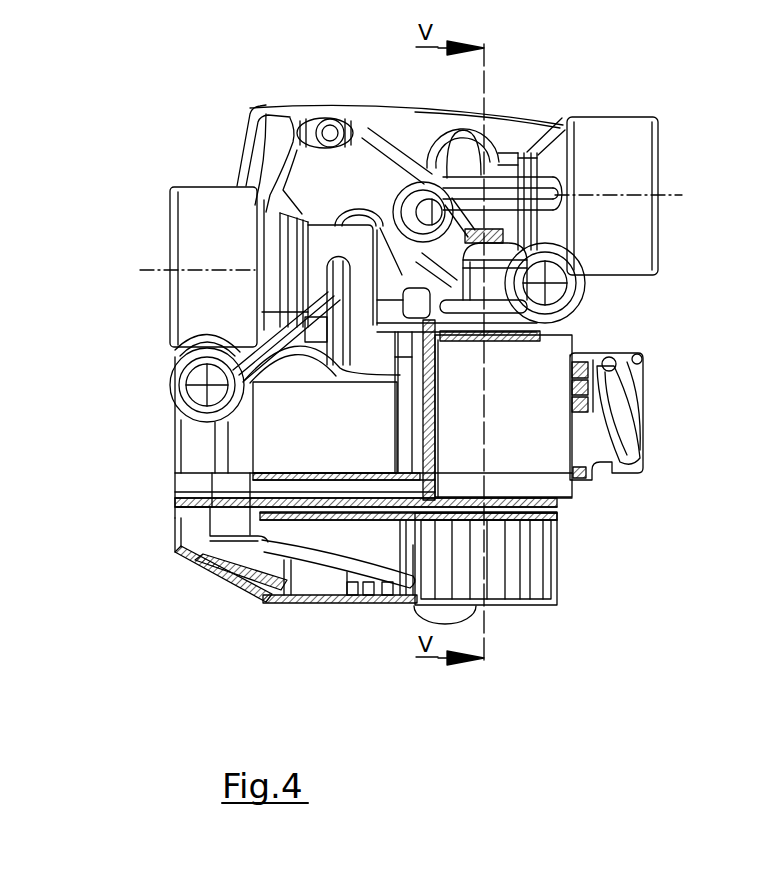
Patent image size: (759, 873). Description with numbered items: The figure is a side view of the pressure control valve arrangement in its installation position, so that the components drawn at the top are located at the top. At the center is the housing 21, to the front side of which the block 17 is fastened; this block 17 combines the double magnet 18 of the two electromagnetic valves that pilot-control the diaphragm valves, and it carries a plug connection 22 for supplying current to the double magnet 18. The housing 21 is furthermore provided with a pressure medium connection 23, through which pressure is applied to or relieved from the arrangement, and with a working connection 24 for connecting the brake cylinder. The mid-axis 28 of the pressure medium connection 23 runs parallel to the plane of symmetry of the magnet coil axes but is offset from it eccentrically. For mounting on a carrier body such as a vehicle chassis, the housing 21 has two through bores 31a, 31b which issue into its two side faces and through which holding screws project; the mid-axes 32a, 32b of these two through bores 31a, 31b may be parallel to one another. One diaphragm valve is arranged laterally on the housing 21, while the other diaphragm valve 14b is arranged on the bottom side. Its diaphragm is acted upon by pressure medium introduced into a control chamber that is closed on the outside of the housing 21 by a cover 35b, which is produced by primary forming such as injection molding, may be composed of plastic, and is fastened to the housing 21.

The diaphragm valve 14b is at (522, 612).
The block 17 is at (550, 438).
The double magnet 18 is at (557, 357).
The housing 21 is at (320, 115).
The plug connection 22 is at (630, 410).
The pressure medium connection 23 is at (667, 172).
The working connection 24 is at (165, 239).
The mid-axis of the pressure medium connection 28 is at (678, 198).
The through bore 31a is at (588, 298).
The through bore 31b is at (195, 398).
The mid-axis of the through bore 32a is at (588, 262).
The mid-axis of the through bore 32b is at (190, 370).
The cover 35b is at (547, 582).